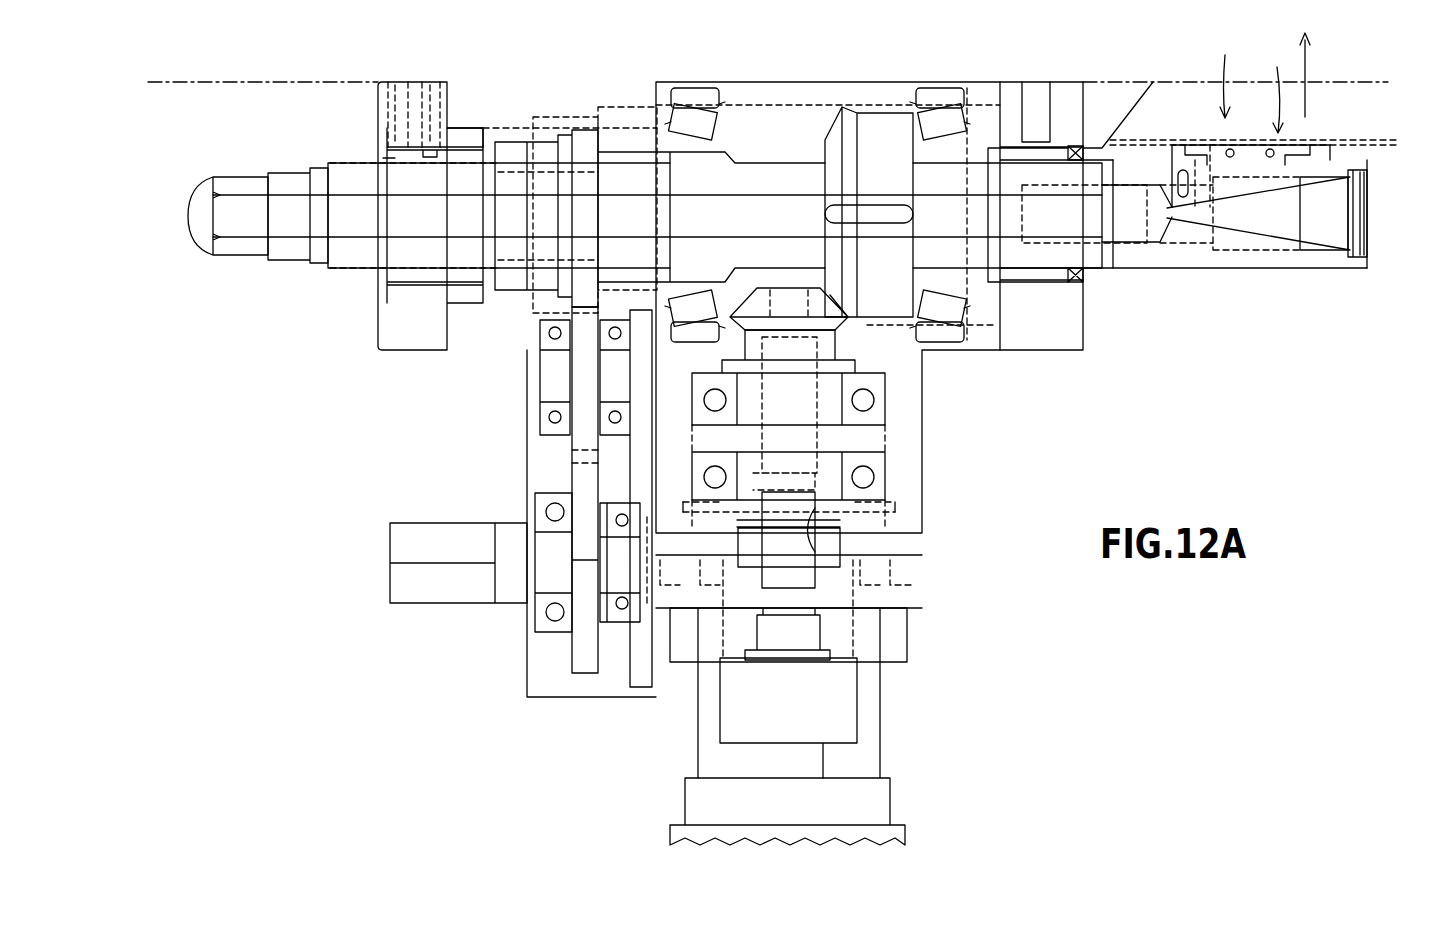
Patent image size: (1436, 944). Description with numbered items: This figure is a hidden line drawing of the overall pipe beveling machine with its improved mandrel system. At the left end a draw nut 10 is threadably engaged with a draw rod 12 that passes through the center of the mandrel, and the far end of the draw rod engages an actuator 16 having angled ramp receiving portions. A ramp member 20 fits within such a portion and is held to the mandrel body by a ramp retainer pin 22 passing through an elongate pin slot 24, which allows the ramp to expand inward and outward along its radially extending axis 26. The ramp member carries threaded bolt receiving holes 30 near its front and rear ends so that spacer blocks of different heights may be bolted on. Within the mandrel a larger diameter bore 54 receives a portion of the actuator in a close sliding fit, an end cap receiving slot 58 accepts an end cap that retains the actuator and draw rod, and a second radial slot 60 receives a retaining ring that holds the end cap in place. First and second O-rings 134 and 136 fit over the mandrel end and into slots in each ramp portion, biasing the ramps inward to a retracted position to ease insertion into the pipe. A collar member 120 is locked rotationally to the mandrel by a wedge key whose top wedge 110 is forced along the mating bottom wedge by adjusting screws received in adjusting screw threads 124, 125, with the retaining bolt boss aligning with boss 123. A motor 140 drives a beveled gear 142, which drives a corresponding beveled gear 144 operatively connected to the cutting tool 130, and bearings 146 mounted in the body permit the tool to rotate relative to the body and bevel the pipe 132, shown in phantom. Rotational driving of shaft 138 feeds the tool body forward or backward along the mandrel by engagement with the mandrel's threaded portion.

The draw nut 10 is at (297, 262).
The draw rod 12 is at (280, 240).
The actuator 16 is at (1285, 227).
The ramp member 20 is at (1255, 167).
The ramp retainer pin 22 is at (1182, 170).
The elongate pin slot 24 is at (1185, 205).
The axis 26 is at (1307, 63).
The threaded bolt receiving holes 30 is at (1290, 168).
The larger diameter bore 54 is at (1197, 242).
The end cap receiving slot 58 is at (1350, 257).
The second radial slot 60 is at (1367, 247).
The top wedge 110 is at (390, 158).
The collar member 120 is at (413, 352).
The boss 123 is at (437, 115).
The adjusting screw threads 124 is at (470, 140).
The adjusting screw threads 125 is at (394, 102).
The cutting tool 130 is at (1157, 97).
The pipe 132 is at (1322, 138).
The first O-ring 134 is at (1227, 73).
The second O-ring 136 is at (1275, 90).
The shaft 138 is at (430, 605).
The motor 140 is at (893, 800).
The beveled gear 142 is at (848, 318).
The beveled gear 144 is at (808, 90).
The bearings 146 is at (700, 93).